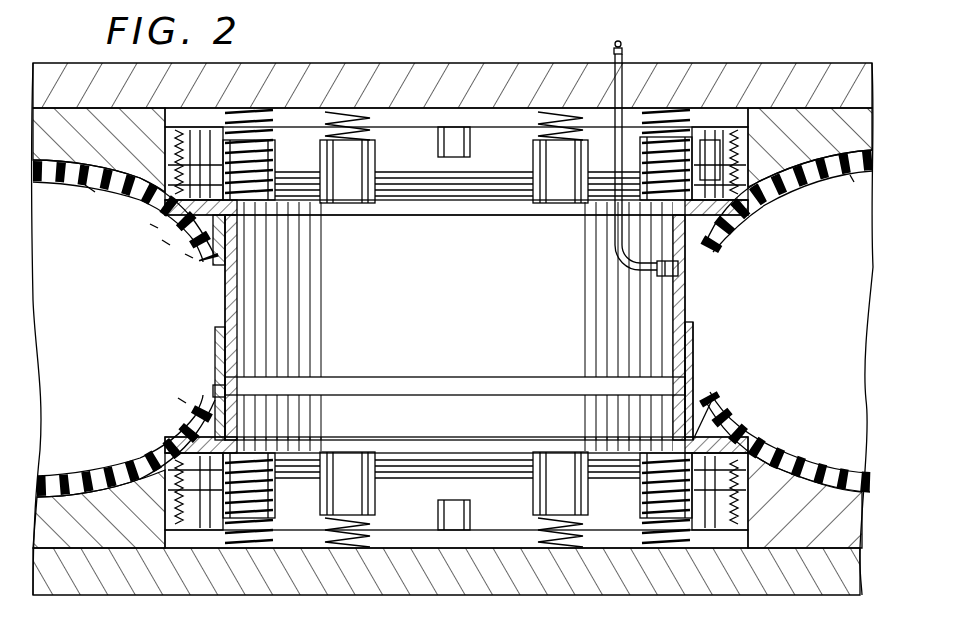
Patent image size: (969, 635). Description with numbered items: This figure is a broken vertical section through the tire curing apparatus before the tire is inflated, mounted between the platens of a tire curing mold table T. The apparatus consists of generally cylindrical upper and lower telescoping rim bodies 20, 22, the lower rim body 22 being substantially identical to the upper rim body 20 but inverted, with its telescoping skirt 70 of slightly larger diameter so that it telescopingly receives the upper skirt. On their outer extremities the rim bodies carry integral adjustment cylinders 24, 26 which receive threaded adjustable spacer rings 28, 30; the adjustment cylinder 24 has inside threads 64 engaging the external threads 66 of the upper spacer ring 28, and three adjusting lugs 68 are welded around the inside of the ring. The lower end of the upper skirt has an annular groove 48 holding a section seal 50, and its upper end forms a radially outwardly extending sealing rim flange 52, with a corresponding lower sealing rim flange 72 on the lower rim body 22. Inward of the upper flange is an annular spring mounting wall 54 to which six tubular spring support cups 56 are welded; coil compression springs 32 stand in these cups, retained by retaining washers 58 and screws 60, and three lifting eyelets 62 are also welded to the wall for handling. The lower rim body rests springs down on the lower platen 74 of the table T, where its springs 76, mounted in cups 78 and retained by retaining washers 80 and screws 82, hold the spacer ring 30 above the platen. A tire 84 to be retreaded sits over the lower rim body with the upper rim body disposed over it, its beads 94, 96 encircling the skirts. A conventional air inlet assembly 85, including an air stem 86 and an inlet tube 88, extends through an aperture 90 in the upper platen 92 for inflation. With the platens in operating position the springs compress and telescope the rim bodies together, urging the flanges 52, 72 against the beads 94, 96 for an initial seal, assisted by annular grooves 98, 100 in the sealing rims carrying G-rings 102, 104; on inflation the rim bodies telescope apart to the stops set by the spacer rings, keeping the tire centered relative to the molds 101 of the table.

The tire curing mold table T is at (826, 62).
The upper rim body 20 is at (704, 270).
The lower rim body 22 is at (706, 352).
The adjustment cylinder 24 is at (165, 152).
The adjustment cylinder 26 is at (750, 505).
The upper adjusting spacer ring 28 is at (712, 128).
The spacer ring 30 is at (715, 530).
The coil compression springs 32 is at (262, 108).
The annular groove 48 is at (231, 384).
The section seal 50 is at (226, 390).
The sealing rim flange 52 is at (752, 156).
The spring mounting wall 54 is at (300, 208).
The tubular spring support cups 56 is at (277, 152).
The retaining washers 58 is at (280, 212).
The screws 60 is at (213, 258).
The lifting eyelets 62 is at (200, 130).
The inside threads 64 is at (122, 195).
The external threads 66 is at (178, 130).
The adjusting lugs 68 is at (470, 142).
The telescoping skirt 70 is at (700, 372).
The sealing rim flange 72 is at (745, 412).
The lower platen 74 is at (482, 540).
The springs 76 is at (372, 533).
The cups 78 is at (276, 506).
The retaining washers 80 is at (212, 522).
The screws 82 is at (252, 520).
The tire 84 is at (90, 192).
The air inlet assembly 85 is at (612, 262).
The air stem 86 is at (680, 282).
The inlet tube 88 is at (622, 48).
The aperture 90 is at (612, 70).
The upper platen 92 is at (402, 108).
The bead 94 is at (150, 226).
The bead 96 is at (150, 436).
The annular groove 98 is at (185, 256).
The annular groove 100 is at (215, 392).
The molds 101 is at (852, 180).
The G-ring 102 is at (162, 242).
The G-ring 104 is at (178, 400).